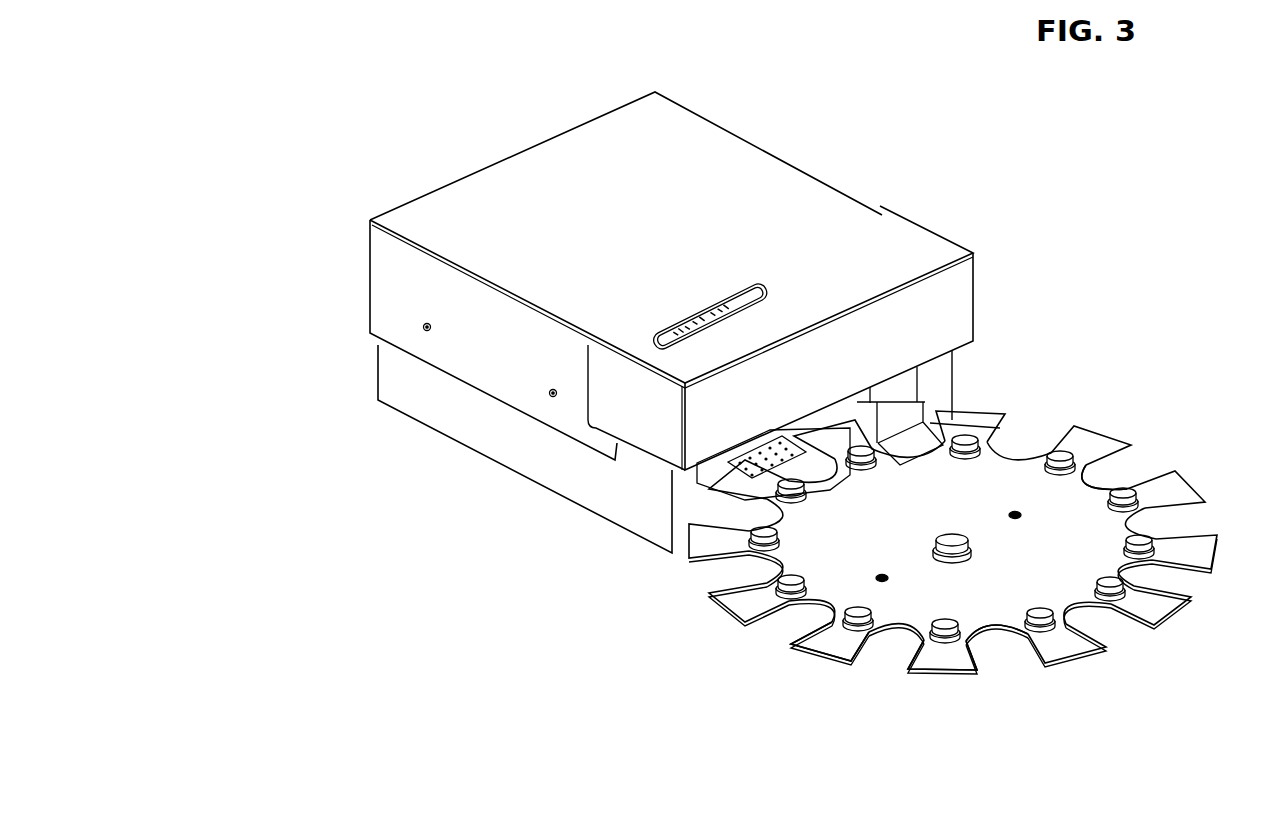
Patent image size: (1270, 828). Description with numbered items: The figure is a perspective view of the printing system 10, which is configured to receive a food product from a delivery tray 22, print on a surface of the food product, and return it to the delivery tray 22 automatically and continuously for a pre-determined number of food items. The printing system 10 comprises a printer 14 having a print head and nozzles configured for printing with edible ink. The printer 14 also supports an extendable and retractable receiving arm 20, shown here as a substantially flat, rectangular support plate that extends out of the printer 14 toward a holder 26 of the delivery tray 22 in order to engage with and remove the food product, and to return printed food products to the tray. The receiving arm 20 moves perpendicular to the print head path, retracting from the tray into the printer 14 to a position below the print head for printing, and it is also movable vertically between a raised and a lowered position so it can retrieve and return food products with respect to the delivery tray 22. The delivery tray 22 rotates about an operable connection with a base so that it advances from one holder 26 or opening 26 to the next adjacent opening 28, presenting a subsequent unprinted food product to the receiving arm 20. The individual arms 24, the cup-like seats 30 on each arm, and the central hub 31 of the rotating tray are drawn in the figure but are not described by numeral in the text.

The printing system 10 is at (318, 178).
The printer 14 is at (1008, 268).
The receiving arm 20 is at (742, 477).
The delivery tray 22 is at (976, 553).
The wheel arm 24 is at (826, 645).
The holder 26 is at (1172, 443).
The opening 28 is at (1001, 656).
The cup holder 30 is at (1062, 631).
The central hub 31 is at (972, 508).